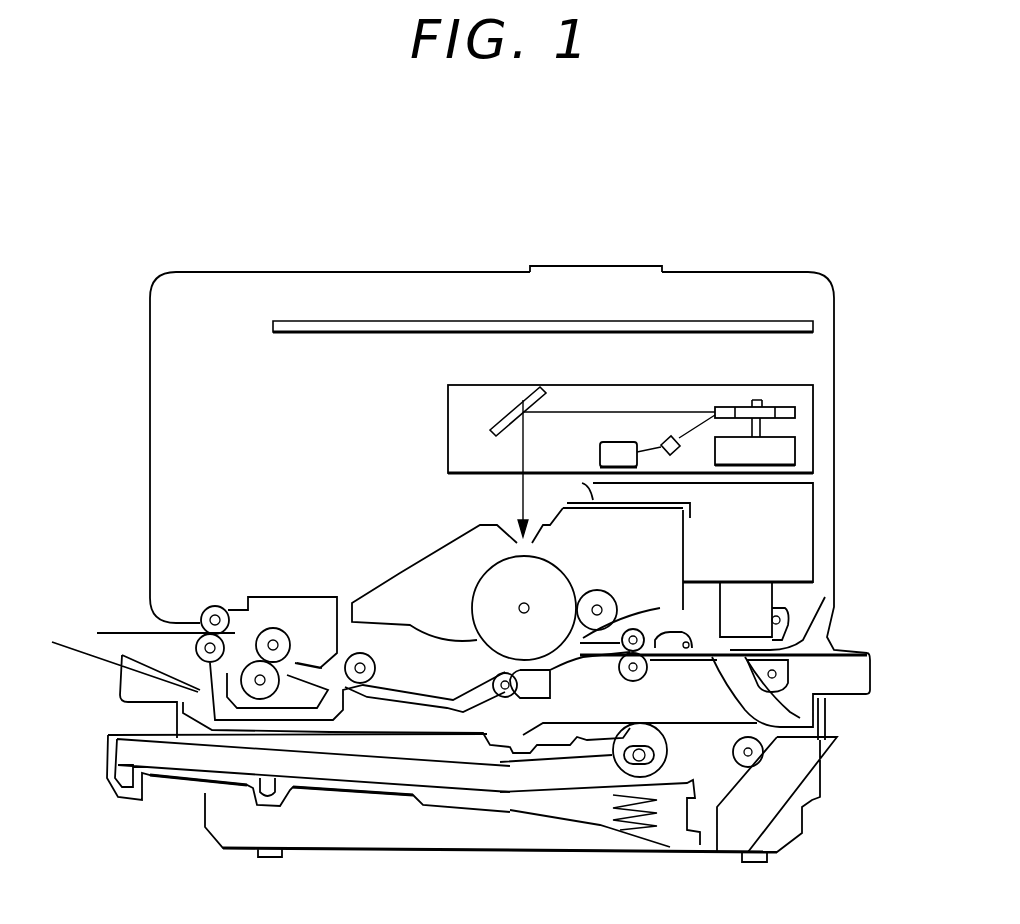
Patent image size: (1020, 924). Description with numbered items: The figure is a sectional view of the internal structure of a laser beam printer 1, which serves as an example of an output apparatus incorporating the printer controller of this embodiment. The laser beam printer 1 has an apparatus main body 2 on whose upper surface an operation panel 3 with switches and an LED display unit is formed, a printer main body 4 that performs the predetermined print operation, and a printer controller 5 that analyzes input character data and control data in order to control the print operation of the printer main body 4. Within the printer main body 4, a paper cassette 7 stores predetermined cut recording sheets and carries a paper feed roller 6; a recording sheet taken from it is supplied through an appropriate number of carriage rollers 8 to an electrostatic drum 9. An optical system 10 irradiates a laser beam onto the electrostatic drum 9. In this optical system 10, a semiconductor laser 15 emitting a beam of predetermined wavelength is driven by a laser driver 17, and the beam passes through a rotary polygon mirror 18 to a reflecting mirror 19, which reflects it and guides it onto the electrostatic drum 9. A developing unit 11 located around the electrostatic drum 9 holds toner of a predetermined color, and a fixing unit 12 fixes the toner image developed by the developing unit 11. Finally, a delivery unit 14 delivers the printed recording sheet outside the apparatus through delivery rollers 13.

The laser beam printer 1 is at (686, 262).
The apparatus main body 2 is at (760, 272).
The operation panel 3 is at (600, 268).
The printer main body 4 is at (850, 530).
The printer controller 5 is at (813, 325).
The paper feed roller 6 is at (617, 753).
The paper cassette 7 is at (110, 772).
The carriage rollers 8 is at (628, 674).
The electrostatic drum 9 is at (490, 565).
The optical system 10 is at (444, 420).
The developing unit 11 is at (385, 585).
The fixing unit 12 is at (273, 628).
The delivery rollers 13 is at (216, 606).
The delivery unit 14 is at (82, 632).
The semiconductor laser 15 is at (680, 452).
The laser driver 17 is at (600, 450).
The rotary polygon mirror 18 is at (795, 412).
The reflecting mirror 19 is at (525, 395).